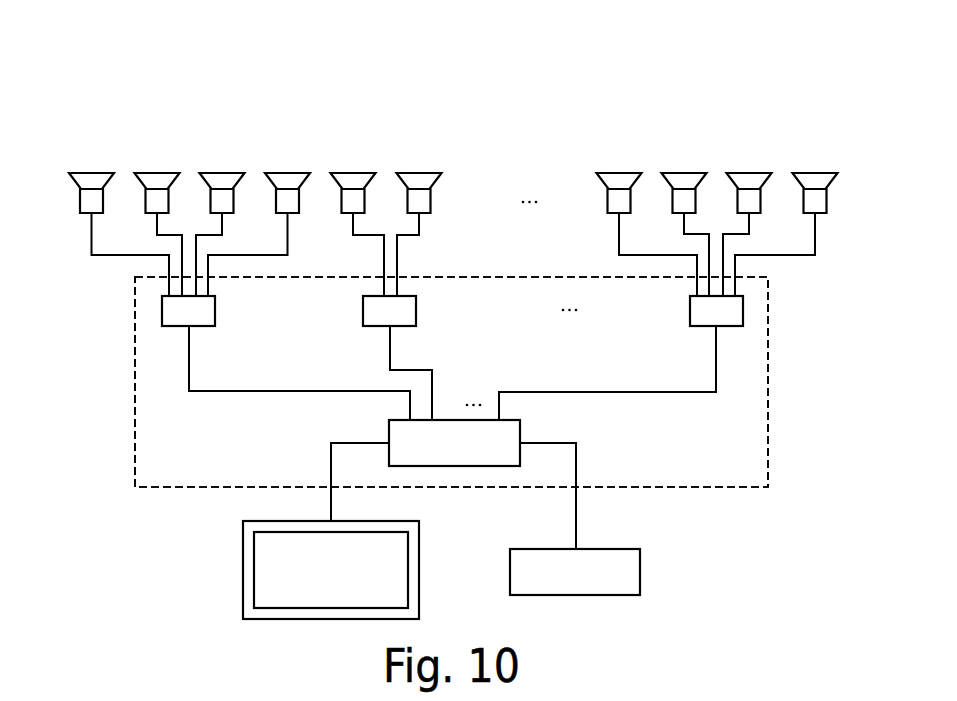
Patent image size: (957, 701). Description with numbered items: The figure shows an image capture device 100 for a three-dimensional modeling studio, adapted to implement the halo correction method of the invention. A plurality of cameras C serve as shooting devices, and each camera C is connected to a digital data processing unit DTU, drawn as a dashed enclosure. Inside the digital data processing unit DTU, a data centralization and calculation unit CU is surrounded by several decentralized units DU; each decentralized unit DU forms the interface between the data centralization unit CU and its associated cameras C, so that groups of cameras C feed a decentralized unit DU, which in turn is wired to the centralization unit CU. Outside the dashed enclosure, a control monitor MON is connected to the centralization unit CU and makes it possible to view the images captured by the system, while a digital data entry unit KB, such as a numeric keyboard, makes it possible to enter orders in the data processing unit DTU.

The image capture device 100 is at (78, 57).
The camera C is at (93, 173).
The decentralized unit DU is at (202, 326).
The data centralization and calculation unit CU is at (520, 423).
The digital data processing unit DTU is at (768, 359).
The control monitor MON is at (243, 562).
The digital data entry unit KB is at (640, 570).